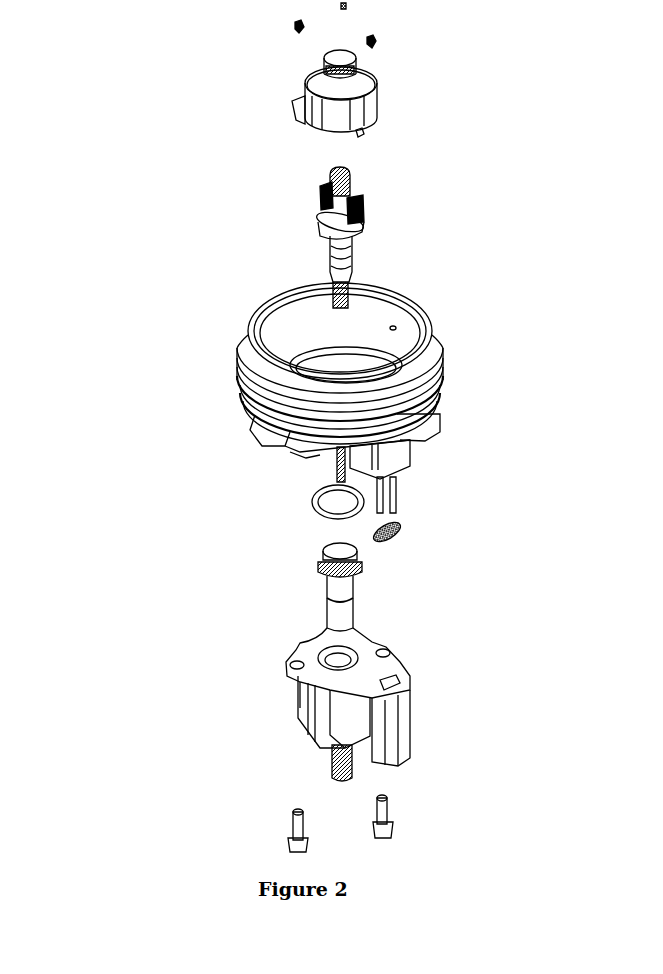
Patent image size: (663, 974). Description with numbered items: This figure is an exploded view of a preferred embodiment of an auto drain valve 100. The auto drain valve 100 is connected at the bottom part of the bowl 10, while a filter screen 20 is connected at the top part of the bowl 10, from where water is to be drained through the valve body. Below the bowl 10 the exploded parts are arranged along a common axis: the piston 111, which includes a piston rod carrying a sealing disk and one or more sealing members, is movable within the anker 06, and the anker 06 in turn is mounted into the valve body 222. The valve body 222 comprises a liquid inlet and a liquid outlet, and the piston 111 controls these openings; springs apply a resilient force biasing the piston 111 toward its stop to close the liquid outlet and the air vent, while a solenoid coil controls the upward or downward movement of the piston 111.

The auto drain valve 100 is at (136, 88).
The filter screen 20 is at (383, 103).
The piston 111 is at (364, 224).
The bowl 10 is at (426, 321).
The anker 06 is at (352, 603).
The valve body 222 is at (410, 698).